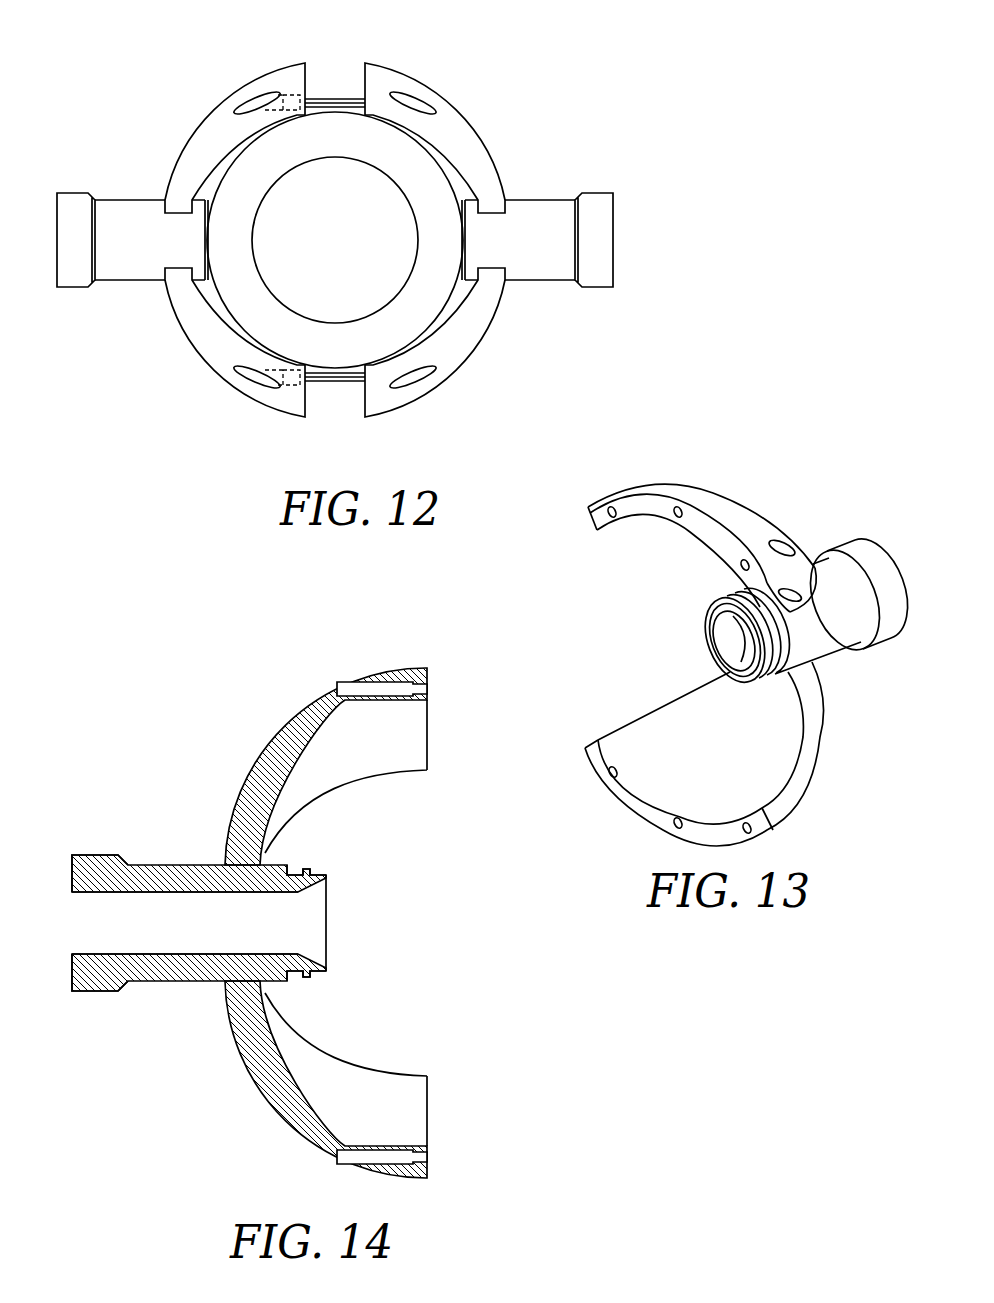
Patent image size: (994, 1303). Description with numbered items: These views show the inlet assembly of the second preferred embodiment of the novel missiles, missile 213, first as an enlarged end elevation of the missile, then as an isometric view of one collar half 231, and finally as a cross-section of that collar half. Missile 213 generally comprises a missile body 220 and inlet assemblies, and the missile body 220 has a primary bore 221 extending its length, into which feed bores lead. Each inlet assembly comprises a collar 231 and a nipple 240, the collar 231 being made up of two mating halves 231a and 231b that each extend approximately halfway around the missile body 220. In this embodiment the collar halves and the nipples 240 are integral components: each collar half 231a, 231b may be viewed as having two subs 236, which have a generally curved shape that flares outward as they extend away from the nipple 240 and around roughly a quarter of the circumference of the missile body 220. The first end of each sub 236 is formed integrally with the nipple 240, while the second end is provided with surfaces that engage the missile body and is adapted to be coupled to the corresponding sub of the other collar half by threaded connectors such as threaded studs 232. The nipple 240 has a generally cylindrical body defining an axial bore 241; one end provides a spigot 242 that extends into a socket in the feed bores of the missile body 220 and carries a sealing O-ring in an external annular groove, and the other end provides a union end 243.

In FIG. 12, the missile 213 is at (166, 52).
In FIG. 12, the missile body 220 is at (397, 317).
In FIG. 12, the primary bore 221 is at (280, 297).
In FIG. 12, the collar 231 is at (411, 64).
In FIG. 13, the collar 231 is at (797, 447).
In FIG. 14, the collar 231 is at (237, 660).
In FIG. 12, the collar half 231a is at (226, 121).
In FIG. 12, the collar half 231b is at (453, 127).
In FIG. 12, the threaded stud 232 is at (330, 97).
In FIG. 12, the sub 236 is at (260, 397).
In FIG. 13, the sub 236 is at (708, 510).
In FIG. 14, the sub 236 is at (305, 735).
In FIG. 12, the nipple 240 is at (543, 197).
In FIG. 13, the nipple 240 is at (830, 655).
In FIG. 14, the nipple 240 is at (92, 853).
In FIG. 13, the axial bore 241 is at (737, 643).
In FIG. 14, the axial bore 241 is at (187, 937).
In FIG. 13, the spigot 242 is at (705, 630).
In FIG. 14, the spigot 242 is at (312, 868).
In FIG. 12, the union end 243 is at (83, 205).
In FIG. 13, the union end 243 is at (857, 550).
In FIG. 14, the union end 243 is at (93, 985).